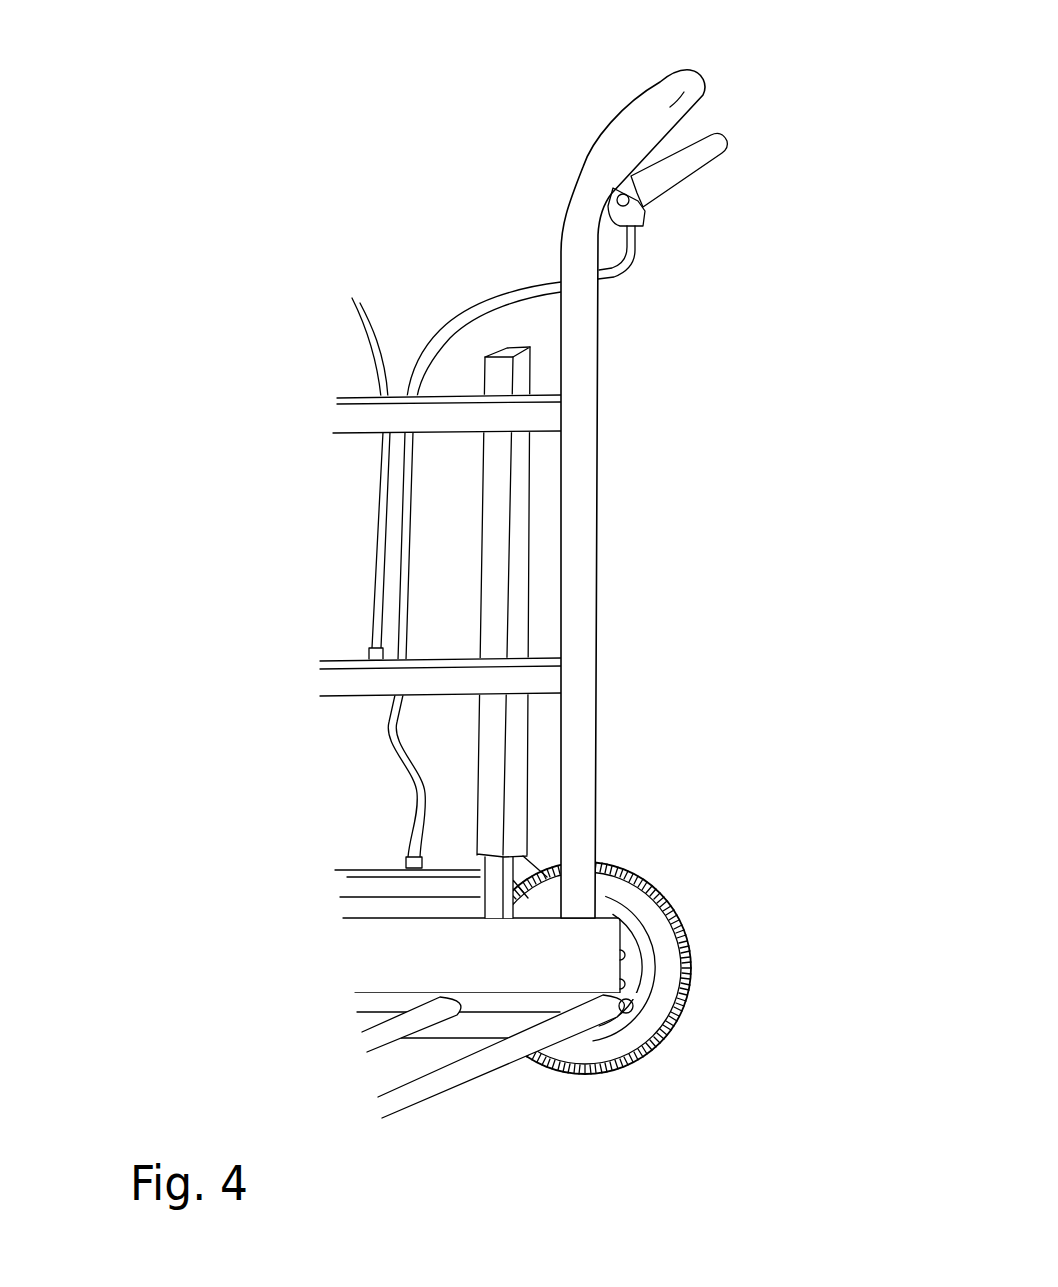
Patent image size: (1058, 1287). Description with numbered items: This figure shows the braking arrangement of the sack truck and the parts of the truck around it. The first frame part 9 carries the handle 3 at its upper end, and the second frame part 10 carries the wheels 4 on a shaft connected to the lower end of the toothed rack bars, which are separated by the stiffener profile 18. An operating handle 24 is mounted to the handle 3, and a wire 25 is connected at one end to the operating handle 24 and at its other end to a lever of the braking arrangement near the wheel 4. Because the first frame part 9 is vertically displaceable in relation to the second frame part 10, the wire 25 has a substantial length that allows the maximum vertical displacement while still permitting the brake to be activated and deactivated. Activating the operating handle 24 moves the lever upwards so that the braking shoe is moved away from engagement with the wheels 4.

The handle 3 is at (693, 72).
The wheel 4 is at (670, 981).
The first frame part 9 is at (747, 490).
The second frame part 10 is at (752, 767).
The stiffener profile 18 is at (350, 872).
The operating handle 24 is at (642, 210).
The wire 25 is at (613, 271).